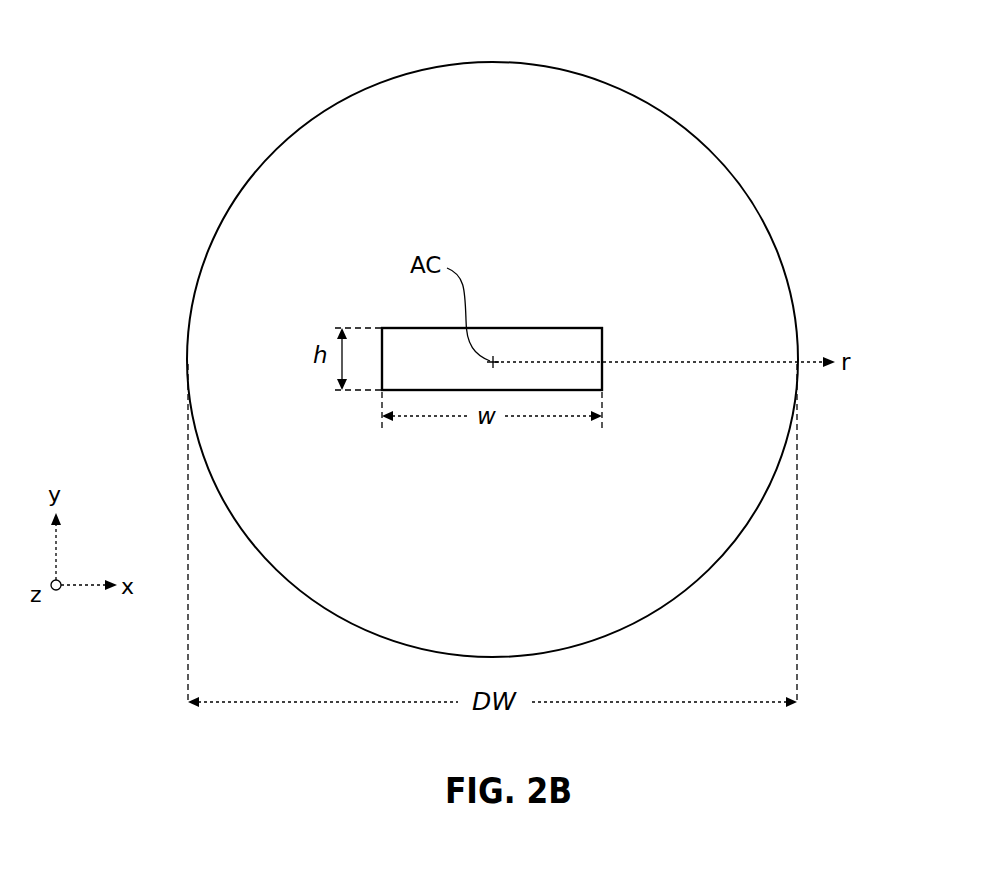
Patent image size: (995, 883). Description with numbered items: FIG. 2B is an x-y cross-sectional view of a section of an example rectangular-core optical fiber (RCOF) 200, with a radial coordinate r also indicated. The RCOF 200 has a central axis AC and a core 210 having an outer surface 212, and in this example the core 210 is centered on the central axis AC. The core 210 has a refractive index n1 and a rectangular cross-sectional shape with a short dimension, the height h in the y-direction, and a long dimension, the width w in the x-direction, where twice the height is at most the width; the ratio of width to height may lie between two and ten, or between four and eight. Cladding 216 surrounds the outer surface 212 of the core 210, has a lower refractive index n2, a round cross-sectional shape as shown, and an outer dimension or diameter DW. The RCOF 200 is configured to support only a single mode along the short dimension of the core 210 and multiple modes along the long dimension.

The rectangular-core optical fiber 200 is at (234, 81).
The cladding 216 is at (613, 118).
The outer surface 212 is at (524, 328).
The core 210 is at (555, 356).